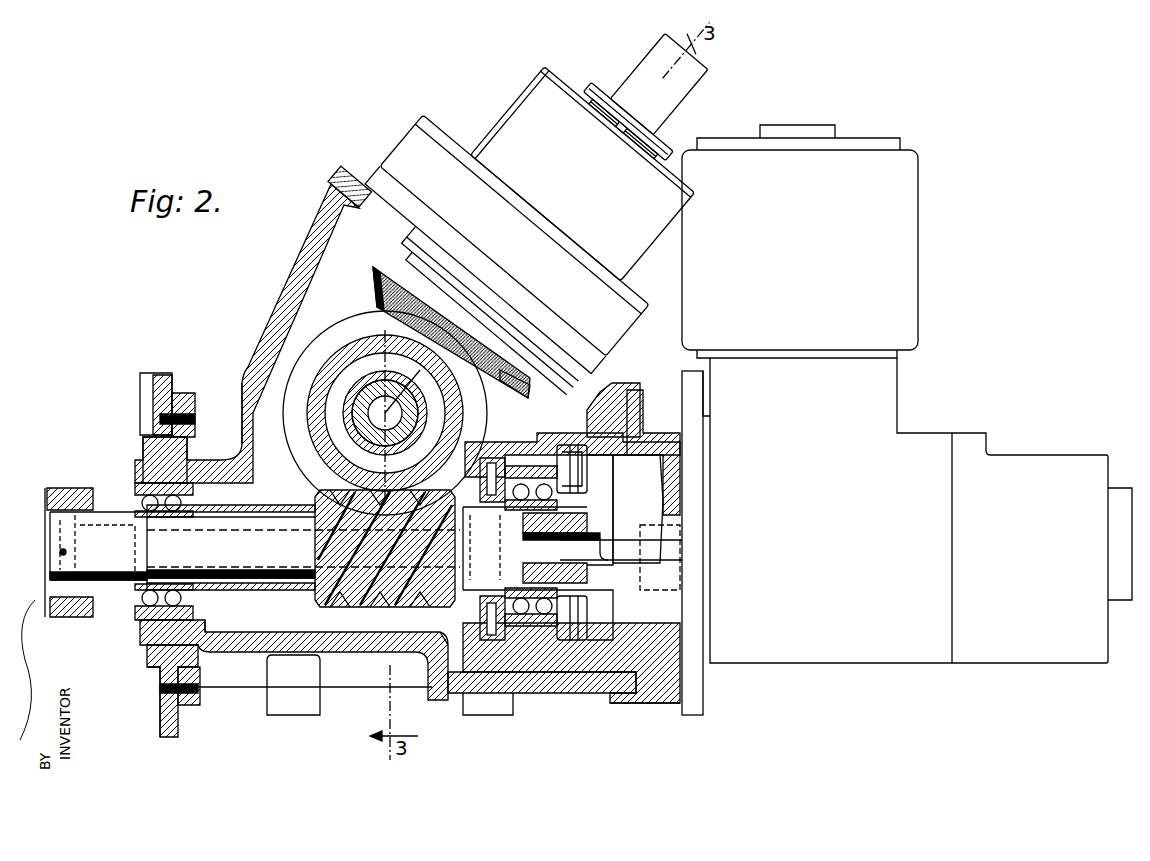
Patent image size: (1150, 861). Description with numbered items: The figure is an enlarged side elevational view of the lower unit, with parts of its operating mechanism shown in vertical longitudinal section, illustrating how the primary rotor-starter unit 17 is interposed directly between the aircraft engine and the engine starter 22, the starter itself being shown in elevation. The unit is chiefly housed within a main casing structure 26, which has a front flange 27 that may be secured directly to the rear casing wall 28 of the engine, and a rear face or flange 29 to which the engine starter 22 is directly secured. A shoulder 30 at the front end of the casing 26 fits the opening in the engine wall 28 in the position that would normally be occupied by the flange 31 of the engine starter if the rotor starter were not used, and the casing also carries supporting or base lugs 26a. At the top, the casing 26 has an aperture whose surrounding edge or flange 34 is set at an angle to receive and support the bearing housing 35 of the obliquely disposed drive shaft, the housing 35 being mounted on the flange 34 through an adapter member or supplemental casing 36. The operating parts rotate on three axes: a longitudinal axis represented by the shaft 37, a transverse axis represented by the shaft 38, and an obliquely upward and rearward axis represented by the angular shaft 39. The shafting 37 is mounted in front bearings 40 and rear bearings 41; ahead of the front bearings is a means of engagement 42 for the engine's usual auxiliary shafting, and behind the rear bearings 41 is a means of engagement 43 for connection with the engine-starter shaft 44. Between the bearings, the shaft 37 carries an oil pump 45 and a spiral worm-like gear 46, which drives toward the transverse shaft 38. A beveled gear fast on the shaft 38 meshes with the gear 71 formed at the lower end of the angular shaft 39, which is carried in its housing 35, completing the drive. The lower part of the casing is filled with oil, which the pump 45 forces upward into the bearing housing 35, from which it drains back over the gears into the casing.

The primary rotor-starter unit 17 is at (258, 359).
The engine starter 22 is at (907, 420).
The main casing structure 26 is at (312, 250).
The supporting or base lugs 26a is at (293, 710).
The front flange 27 is at (195, 400).
The rear casing wall 28 is at (145, 392).
The rear face or flange 29 is at (627, 700).
The shoulder 30 is at (160, 459).
The flange of the engine starter 31 is at (622, 462).
The flange 34 is at (345, 176).
The bearing housing 35 is at (582, 174).
The adapter member or supplemental casing 36 is at (497, 256).
The shaft 37 is at (303, 547).
The transverse shaft 38 is at (352, 417).
The angular shaft 39 is at (460, 318).
The front bearings 40 is at (180, 601).
The rear bearings 41 is at (565, 490).
The means of engagement 42 is at (79, 552).
The means of engagement 43 is at (596, 520).
The engine-starter shaft 44 is at (660, 572).
The oil pump 45 is at (475, 612).
The spiral worm-like gear 46 is at (335, 600).
The gear 71 is at (528, 392).